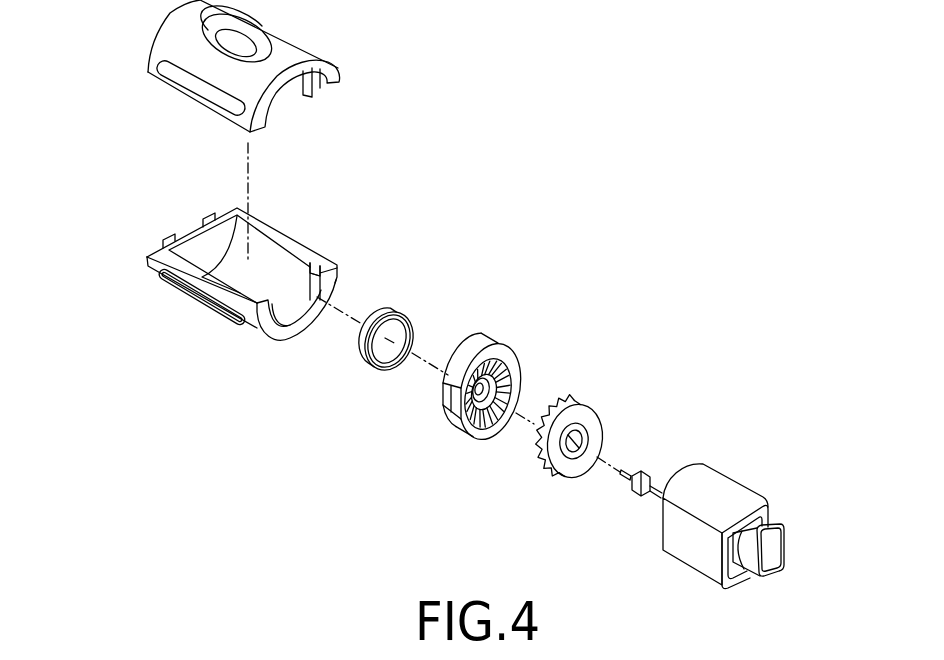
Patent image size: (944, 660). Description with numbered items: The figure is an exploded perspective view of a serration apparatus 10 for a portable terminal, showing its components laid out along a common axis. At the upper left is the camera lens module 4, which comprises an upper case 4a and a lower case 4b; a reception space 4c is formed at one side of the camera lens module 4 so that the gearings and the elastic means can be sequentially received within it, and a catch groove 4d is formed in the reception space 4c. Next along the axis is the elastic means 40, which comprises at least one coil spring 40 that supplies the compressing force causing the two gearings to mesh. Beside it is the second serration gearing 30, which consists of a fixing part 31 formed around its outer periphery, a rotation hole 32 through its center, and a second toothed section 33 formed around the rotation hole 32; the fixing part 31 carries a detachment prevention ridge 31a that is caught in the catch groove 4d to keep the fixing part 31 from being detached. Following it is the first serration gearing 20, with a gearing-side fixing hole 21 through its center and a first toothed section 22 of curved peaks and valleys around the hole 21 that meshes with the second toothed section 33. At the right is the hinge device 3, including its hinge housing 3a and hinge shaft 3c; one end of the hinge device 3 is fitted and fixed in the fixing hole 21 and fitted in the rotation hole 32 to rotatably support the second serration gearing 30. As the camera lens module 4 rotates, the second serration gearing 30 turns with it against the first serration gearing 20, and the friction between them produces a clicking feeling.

The serration apparatus 10 is at (536, 204).
The camera lens module 4 is at (62, 161).
The upper case 4a is at (148, 73).
The lower case 4b is at (147, 257).
The reception space 4c is at (283, 308).
The catch groove 4d is at (312, 263).
The elastic means (coil spring) 40 is at (407, 313).
The second serration gearing 30 is at (612, 282).
The fixing part 31 is at (519, 366).
The detachment prevention ridge 31a is at (442, 408).
The rotation hole 32 is at (484, 391).
The second toothed section 33 is at (500, 372).
The first serration gearing 20 is at (713, 354).
The gearing-side fixing hole 21 is at (573, 437).
The first toothed section 22 is at (567, 407).
The hinge device 3 is at (847, 421).
The hinge housing 3a is at (730, 483).
The hinge shaft 3c is at (767, 527).